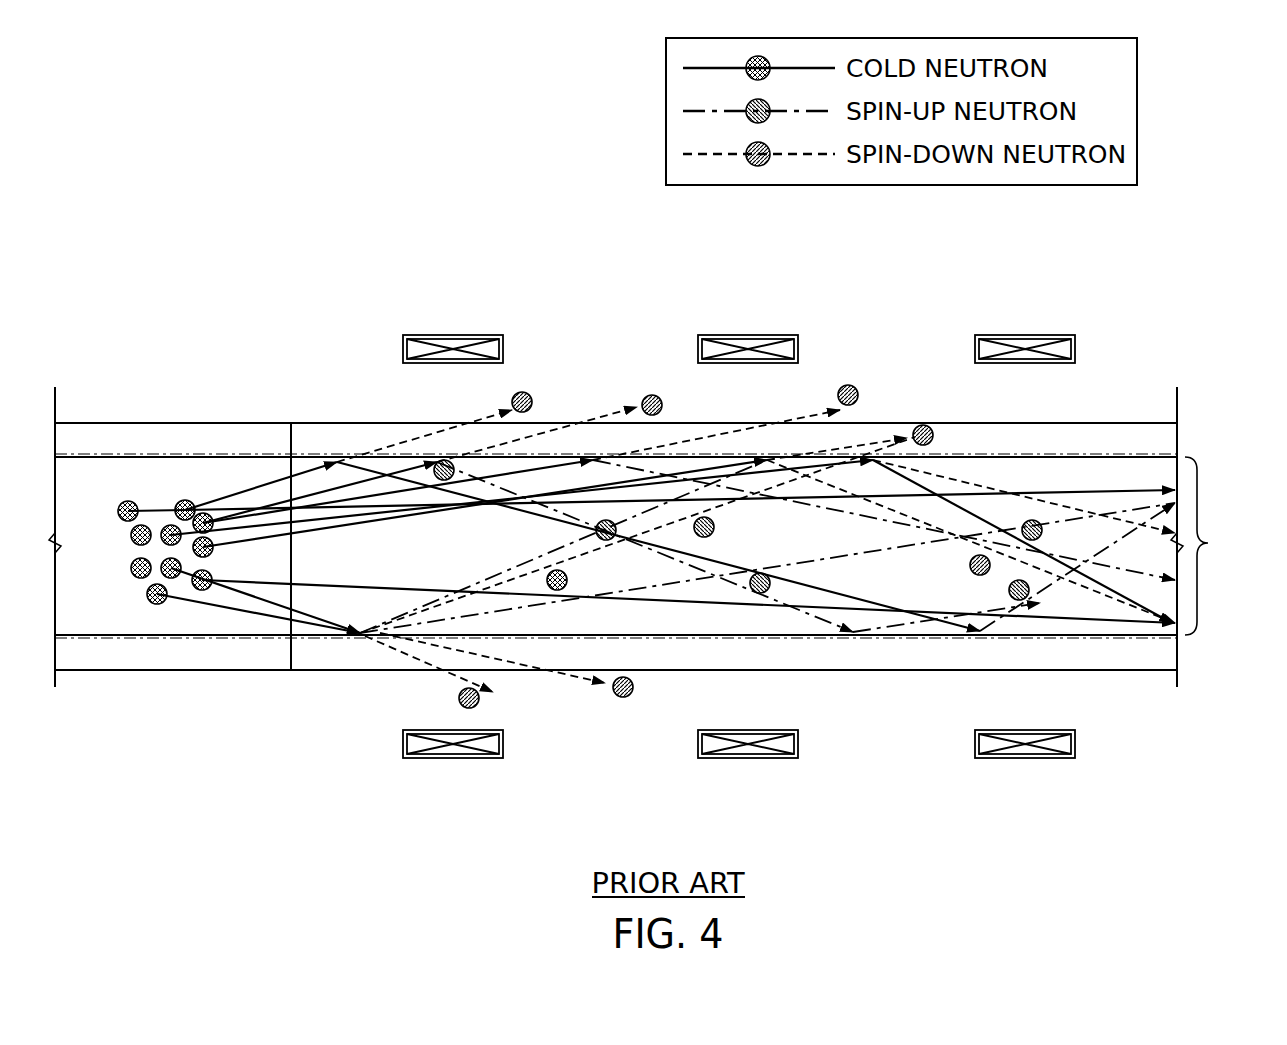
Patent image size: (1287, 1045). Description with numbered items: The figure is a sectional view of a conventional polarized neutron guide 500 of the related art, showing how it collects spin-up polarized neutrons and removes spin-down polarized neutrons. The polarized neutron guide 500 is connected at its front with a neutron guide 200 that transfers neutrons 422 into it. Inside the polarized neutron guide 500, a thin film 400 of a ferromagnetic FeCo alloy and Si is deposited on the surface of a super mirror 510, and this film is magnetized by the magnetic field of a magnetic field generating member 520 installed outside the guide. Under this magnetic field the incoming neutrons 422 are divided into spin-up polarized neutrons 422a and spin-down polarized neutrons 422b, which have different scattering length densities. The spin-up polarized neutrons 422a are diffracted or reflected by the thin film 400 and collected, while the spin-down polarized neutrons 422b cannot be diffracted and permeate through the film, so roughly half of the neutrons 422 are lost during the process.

The neutron guide 200 is at (163, 670).
The thin film 400 is at (373, 423).
The super mirror 510 is at (315, 457).
The polarized neutron guide 500 is at (739, 548).
The magnetic field generating member 520 is at (451, 335).
The neutrons 422 is at (127, 500).
The spin-up polarized neutrons 422a is at (1229, 546).
The spin-down polarized neutrons 422b is at (921, 425).